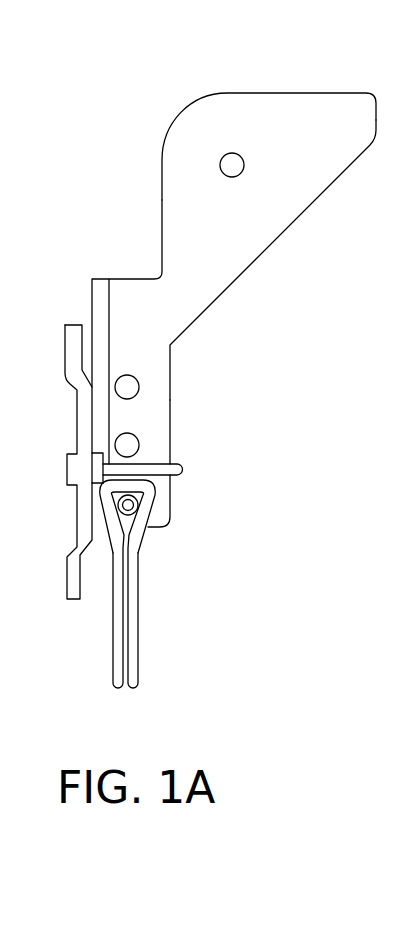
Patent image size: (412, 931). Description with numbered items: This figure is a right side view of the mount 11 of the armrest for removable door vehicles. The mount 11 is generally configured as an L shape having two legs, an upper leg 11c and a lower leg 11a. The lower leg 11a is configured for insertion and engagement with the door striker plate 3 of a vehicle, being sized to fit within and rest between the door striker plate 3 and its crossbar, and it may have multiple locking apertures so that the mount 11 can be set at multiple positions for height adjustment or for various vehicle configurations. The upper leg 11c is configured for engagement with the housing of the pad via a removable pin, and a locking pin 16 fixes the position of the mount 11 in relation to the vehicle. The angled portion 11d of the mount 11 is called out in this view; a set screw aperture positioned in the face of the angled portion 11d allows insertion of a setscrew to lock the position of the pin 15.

The mount 11 is at (201, 290).
The lower leg 11a is at (170, 497).
The upper leg 11c is at (305, 103).
The angled portion 11d is at (284, 266).
The pin 15 is at (224, 156).
The door striker plate 3 is at (77, 382).
The locking pin 16 is at (140, 590).